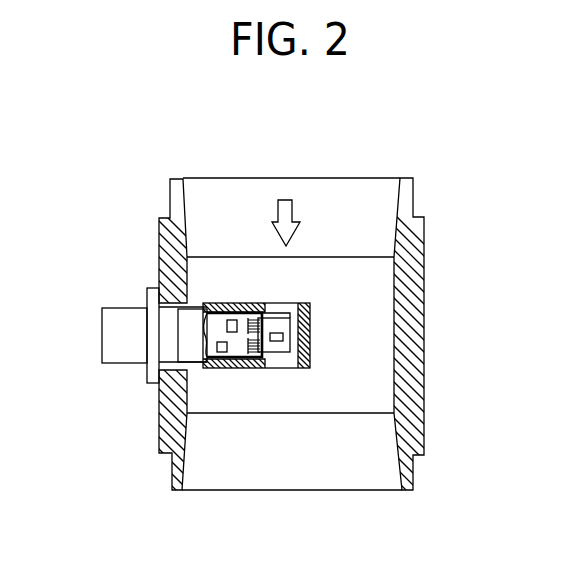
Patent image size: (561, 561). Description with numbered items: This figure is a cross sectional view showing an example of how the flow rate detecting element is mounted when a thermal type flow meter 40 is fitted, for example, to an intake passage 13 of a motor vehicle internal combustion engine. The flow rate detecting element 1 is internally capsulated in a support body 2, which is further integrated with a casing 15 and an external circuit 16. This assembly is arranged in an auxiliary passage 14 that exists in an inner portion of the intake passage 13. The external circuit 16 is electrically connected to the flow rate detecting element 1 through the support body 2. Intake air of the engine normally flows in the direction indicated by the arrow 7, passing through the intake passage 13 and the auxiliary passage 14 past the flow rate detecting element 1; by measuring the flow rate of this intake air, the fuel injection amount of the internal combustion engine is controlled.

The intake passage 13 is at (180, 188).
The arrow 7 is at (287, 205).
The thermal type flow meter 40 is at (140, 318).
The external circuit 16 is at (233, 348).
The casing 15 is at (238, 362).
The auxiliary passage 14 is at (288, 363).
The flow rate detecting element 1 is at (273, 352).
The support body 2 is at (277, 325).